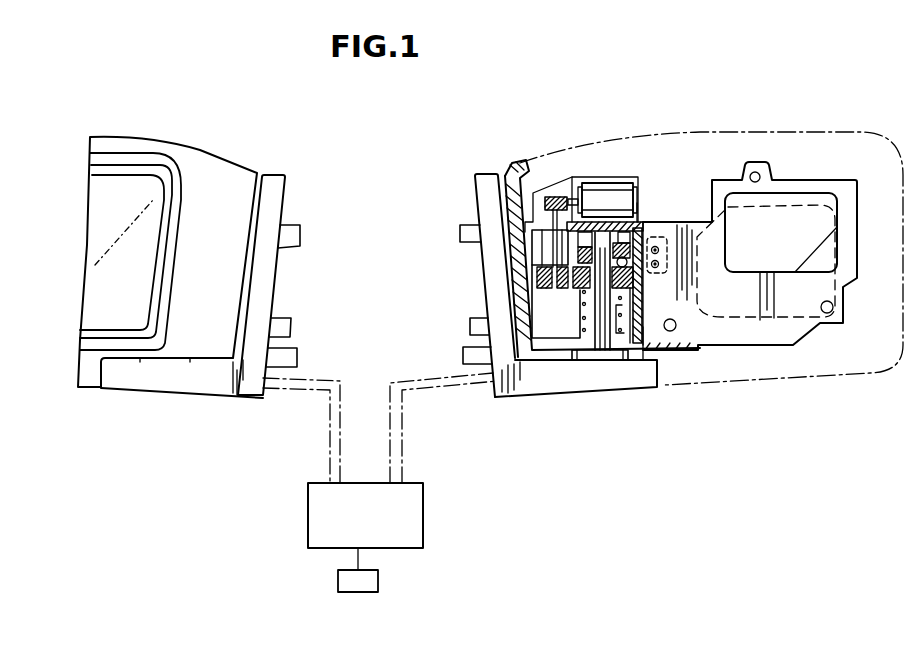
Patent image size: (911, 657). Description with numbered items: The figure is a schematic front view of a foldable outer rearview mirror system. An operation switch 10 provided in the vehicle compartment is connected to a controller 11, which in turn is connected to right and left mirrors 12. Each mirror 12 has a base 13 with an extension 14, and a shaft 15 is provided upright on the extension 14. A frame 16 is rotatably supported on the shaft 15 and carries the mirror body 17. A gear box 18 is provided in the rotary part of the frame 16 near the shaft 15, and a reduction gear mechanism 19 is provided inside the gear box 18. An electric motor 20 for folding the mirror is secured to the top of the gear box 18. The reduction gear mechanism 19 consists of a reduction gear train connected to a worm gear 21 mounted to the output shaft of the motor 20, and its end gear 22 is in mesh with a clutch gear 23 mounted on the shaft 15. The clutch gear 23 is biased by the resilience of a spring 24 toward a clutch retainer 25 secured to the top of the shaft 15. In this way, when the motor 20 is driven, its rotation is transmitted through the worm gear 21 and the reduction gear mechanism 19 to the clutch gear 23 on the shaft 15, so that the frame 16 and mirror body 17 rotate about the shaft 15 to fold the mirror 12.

The operation switch 10 is at (378, 586).
The controller 11 is at (423, 524).
The mirror 12 is at (236, 144).
The base 13 is at (278, 190).
The extension 14 is at (640, 380).
The shaft 15 is at (600, 360).
The frame 16 is at (772, 335).
The mirror body 17 is at (676, 130).
The gear box 18 is at (643, 327).
The reduction gear mechanism 19 is at (543, 250).
The electric motor 20 is at (615, 188).
The worm gear 21 is at (553, 197).
The end gear 22 is at (532, 283).
The clutch gear 23 is at (582, 288).
The spring 24 is at (578, 327).
The clutch retainer 25 is at (620, 253).